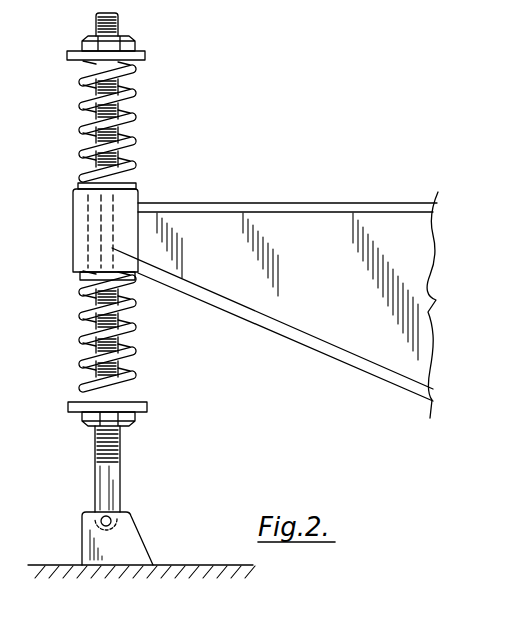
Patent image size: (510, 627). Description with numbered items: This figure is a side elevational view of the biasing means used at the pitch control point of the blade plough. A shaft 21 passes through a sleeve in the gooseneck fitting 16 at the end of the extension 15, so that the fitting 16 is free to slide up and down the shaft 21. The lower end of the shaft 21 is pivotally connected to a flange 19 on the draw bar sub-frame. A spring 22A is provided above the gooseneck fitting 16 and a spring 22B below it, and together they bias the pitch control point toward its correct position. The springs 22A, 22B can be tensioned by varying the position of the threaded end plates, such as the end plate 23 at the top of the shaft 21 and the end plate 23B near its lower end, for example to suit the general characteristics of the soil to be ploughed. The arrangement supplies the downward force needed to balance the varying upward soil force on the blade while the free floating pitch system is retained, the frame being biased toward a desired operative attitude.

The extension 15 is at (332, 275).
The gooseneck fitting 16 is at (95, 231).
The flange 19 is at (86, 546).
The shaft 21 is at (105, 470).
The spring 22A is at (128, 111).
The spring 22B is at (128, 356).
The end plate 23 is at (137, 45).
The threaded end plate 23B is at (82, 420).